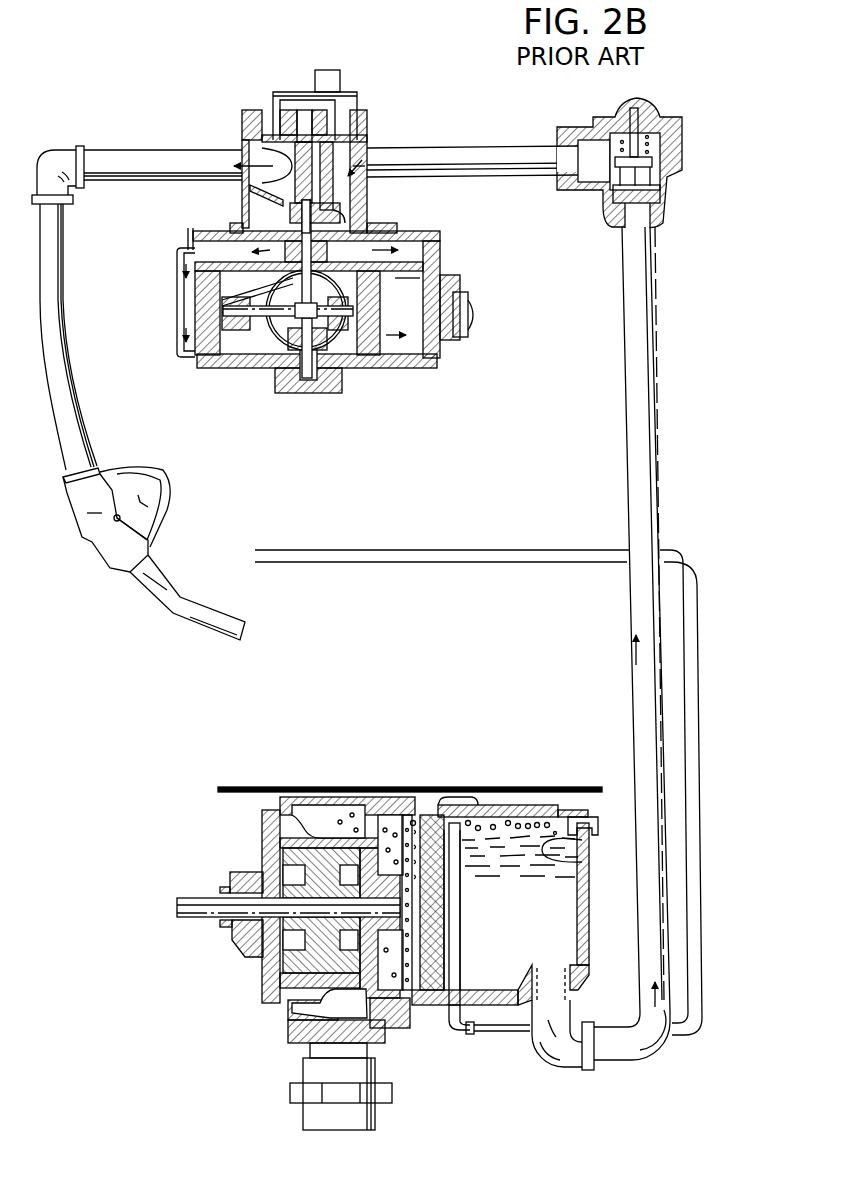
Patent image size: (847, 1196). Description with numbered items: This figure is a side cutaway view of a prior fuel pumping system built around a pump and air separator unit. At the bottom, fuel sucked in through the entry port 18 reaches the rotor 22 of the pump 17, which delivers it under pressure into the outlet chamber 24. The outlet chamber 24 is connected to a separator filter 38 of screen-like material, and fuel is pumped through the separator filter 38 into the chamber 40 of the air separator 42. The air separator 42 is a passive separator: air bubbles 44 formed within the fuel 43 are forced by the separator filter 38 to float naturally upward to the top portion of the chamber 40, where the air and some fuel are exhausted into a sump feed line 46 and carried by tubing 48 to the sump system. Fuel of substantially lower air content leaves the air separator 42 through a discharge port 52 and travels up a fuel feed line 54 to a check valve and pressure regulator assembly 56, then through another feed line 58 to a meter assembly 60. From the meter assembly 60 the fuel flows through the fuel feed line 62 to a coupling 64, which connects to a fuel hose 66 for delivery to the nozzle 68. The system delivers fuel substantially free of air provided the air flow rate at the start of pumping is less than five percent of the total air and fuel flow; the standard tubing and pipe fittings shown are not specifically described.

The pump 17 is at (262, 1000).
The entry port 18 is at (347, 1008).
The rotor 22 is at (293, 852).
The outlet chamber 24 is at (333, 813).
The separator filter 38 is at (437, 823).
The chamber 40 is at (575, 912).
The air separator 42 is at (510, 800).
The fuel 43 is at (585, 862).
The air bubbles 44 is at (413, 820).
The sump feed line 46 is at (462, 938).
The tubing 48 is at (702, 951).
The discharge port 52 is at (576, 991).
The fuel feed line 54 is at (662, 490).
The check valve and pressure regulator assembly 56 is at (689, 141).
The feed line 58 is at (445, 157).
The meter assembly 60 is at (368, 121).
The fuel feed line 62 is at (140, 158).
The coupling 64 is at (59, 158).
The fuel hose 66 is at (58, 280).
The nozzle 68 is at (154, 553).